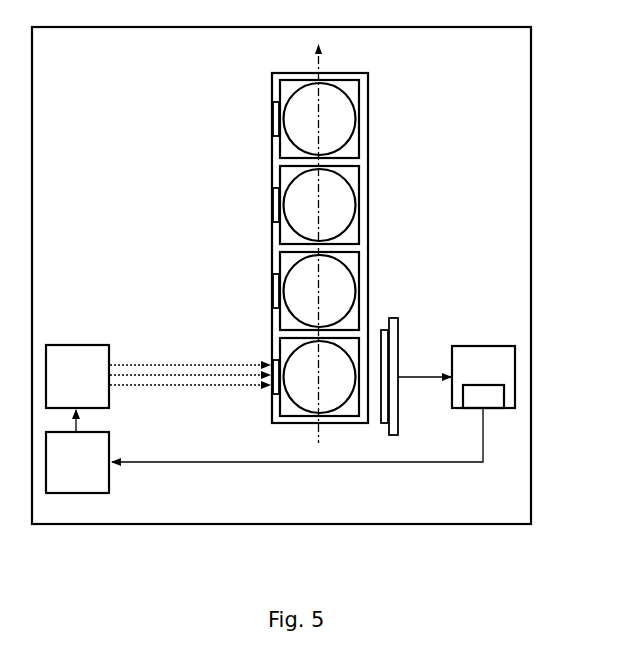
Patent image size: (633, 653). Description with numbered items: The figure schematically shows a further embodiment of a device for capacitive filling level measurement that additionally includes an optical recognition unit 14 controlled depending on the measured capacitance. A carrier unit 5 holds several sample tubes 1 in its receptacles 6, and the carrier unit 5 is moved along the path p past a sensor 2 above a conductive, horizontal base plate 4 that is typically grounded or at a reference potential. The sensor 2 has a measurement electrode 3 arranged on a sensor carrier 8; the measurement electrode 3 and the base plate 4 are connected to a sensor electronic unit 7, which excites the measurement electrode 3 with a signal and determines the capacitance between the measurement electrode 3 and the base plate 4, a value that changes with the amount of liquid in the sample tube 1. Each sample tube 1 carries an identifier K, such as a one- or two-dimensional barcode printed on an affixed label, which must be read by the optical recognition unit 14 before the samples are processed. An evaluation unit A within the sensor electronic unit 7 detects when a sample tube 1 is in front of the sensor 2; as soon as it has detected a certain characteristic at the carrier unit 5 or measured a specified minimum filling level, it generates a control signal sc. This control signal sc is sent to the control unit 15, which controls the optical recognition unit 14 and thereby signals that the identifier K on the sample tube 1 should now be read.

The sample tube 1 is at (288, 98).
The sensor 2 is at (424, 352).
The measurement electrode 3 is at (384, 326).
The base plate 4 is at (358, 527).
The carrier unit 5 is at (372, 93).
The receptacles 6 is at (352, 149).
The sensor electronic unit 7 is at (518, 370).
The sensor carrier 8 is at (402, 425).
The optical recognition unit 14 is at (76, 340).
The control unit 15 is at (114, 485).
The identifier K is at (277, 138).
The evaluation unit A is at (495, 395).
The path p is at (328, 240).
The control signal sc is at (311, 439).